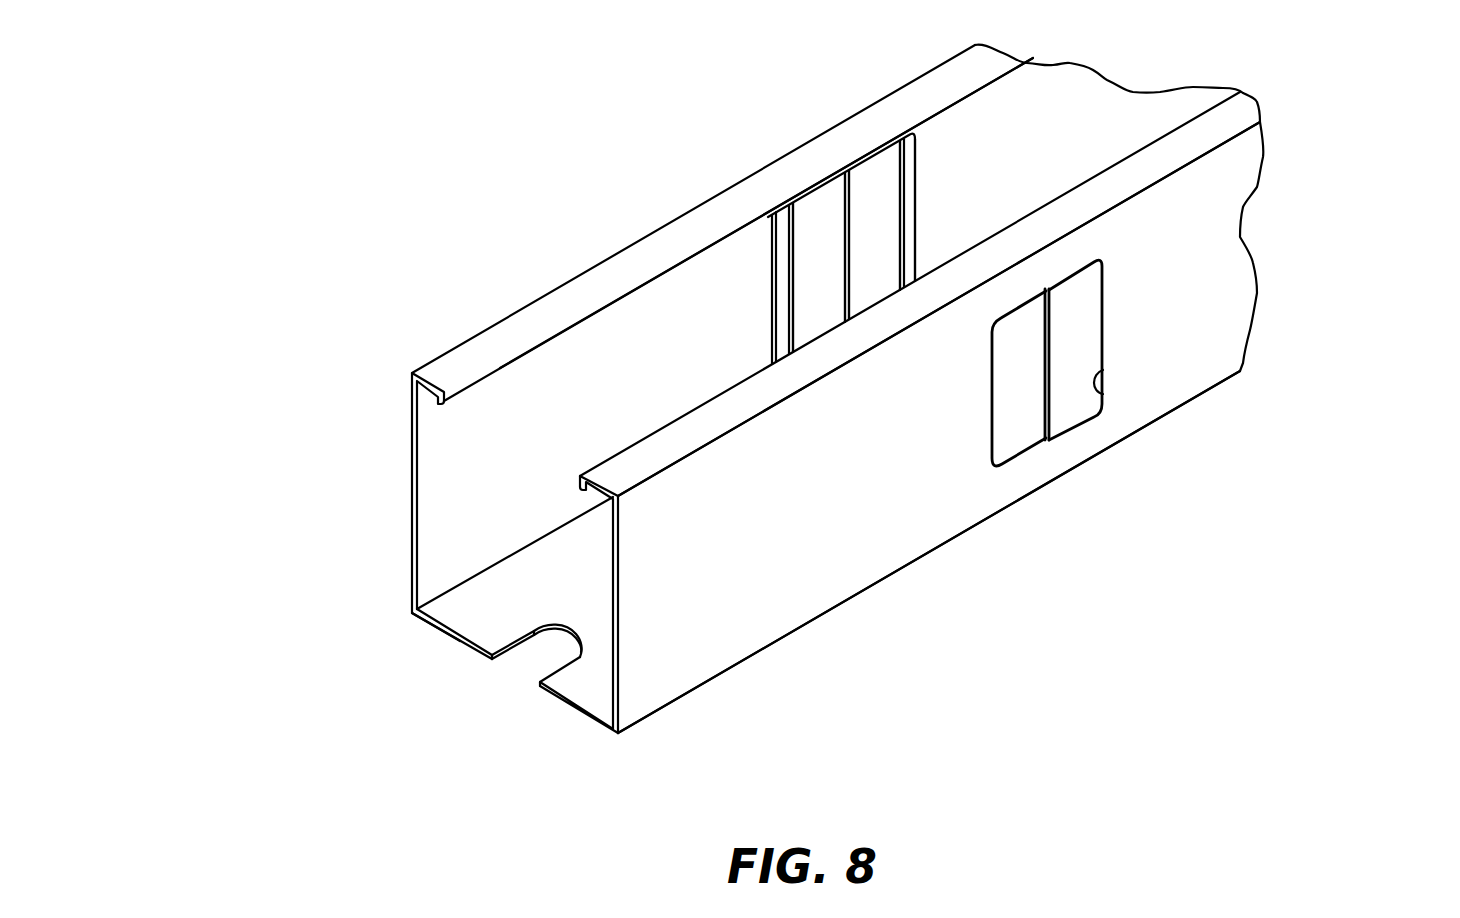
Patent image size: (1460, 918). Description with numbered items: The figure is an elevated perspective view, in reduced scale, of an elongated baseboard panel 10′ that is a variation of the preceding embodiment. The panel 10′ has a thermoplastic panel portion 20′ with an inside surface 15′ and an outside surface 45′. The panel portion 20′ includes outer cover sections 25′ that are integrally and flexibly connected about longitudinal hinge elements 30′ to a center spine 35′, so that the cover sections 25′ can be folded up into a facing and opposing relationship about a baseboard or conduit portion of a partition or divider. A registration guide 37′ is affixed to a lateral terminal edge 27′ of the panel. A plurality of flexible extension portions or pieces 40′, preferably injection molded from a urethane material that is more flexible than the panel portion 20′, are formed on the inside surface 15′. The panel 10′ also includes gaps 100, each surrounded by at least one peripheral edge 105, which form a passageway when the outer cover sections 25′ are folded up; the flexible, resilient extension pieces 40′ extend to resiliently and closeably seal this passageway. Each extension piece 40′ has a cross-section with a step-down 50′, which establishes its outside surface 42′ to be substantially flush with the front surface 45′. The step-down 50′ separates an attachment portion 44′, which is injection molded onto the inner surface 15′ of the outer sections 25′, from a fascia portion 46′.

The baseboard panel 10′ is at (313, 268).
The inside surface 15′ is at (443, 483).
The thermoplastic panel portion 20′ is at (622, 393).
The outer cover sections 25′ is at (405, 448).
The longitudinal hinge elements 30′ is at (462, 583).
The center spine 35′ is at (437, 633).
The lateral terminal edge 27′ is at (470, 648).
The registration guide 37′ is at (520, 668).
The outside surface 45′ is at (873, 503).
The flexible extension pieces 40′ is at (878, 185).
The outside surface of extension piece 42′ is at (1087, 332).
The attachment portion 44′ is at (772, 307).
The fascia portion 46′ is at (808, 322).
The step-down 50′ is at (788, 243).
The gaps 100 is at (762, 263).
The peripheral edge 105 is at (1103, 394).